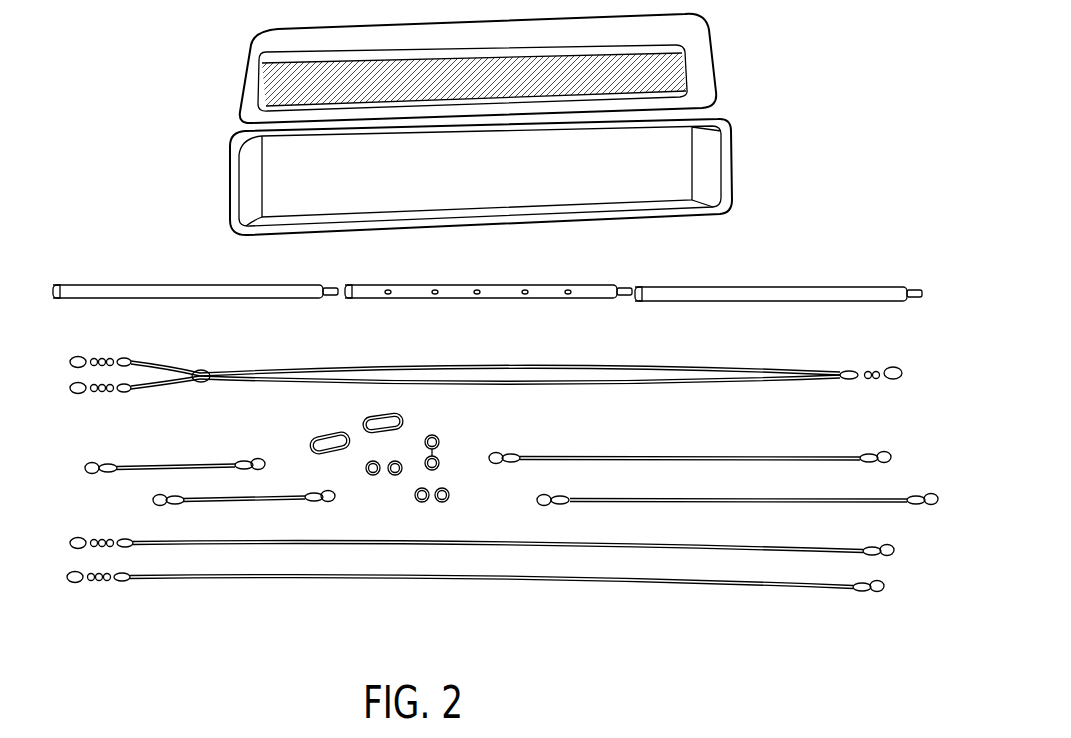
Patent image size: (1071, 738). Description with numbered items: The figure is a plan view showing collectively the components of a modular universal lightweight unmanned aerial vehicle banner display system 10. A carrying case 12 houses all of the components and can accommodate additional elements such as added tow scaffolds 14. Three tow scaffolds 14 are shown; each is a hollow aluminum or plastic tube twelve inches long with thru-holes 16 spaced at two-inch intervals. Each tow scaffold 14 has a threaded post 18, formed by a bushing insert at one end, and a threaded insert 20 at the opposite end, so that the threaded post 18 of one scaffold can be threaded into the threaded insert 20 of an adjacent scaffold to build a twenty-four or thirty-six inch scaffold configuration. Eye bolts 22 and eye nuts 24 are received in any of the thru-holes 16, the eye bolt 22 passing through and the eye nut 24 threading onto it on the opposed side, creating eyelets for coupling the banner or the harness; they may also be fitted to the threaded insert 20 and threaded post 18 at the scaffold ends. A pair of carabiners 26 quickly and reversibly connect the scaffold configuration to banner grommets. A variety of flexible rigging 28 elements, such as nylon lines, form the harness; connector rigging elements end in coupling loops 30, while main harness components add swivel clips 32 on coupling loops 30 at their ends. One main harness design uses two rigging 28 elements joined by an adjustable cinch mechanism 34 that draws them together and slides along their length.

The banner display system 10 is at (490, 360).
The carrying case 12 is at (249, 122).
The tow scaffold 14 is at (478, 282).
The thru-holes 16 is at (100, 285).
The threaded post 18 is at (627, 288).
The threaded insert 20 is at (56, 285).
The eye bolt 22 is at (440, 465).
The eye nut 24 is at (438, 438).
The carabiner 26 is at (318, 436).
The flexible rigging element 28 is at (490, 484).
The coupling loop 30 is at (127, 358).
The swivel clip 32 is at (70, 362).
The cinch mechanism 34 is at (202, 383).